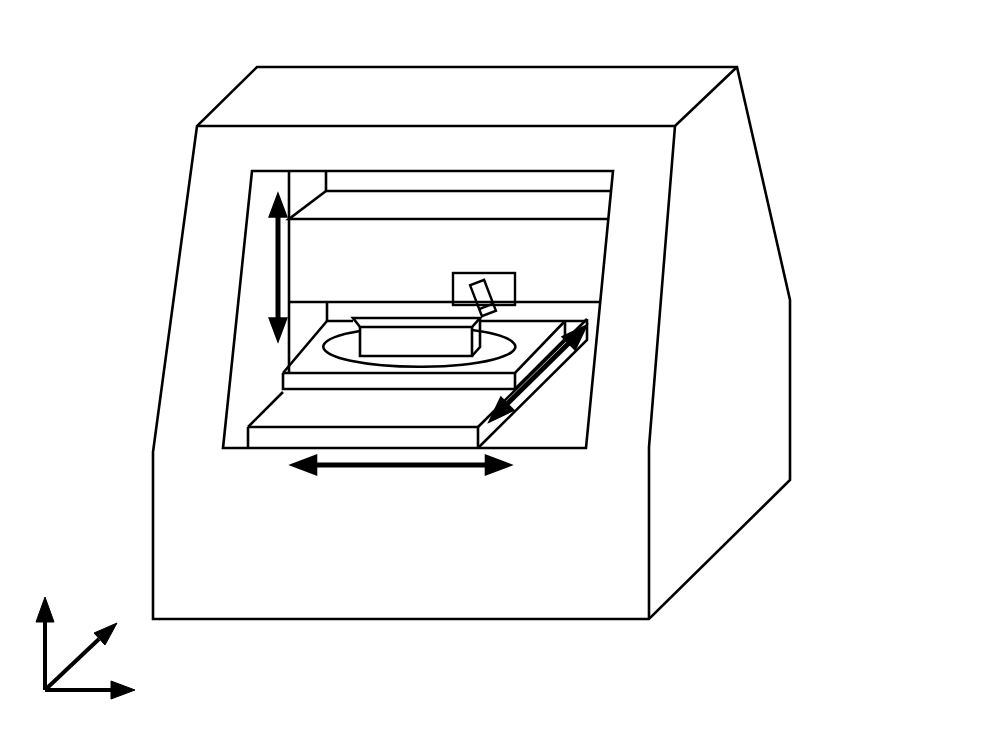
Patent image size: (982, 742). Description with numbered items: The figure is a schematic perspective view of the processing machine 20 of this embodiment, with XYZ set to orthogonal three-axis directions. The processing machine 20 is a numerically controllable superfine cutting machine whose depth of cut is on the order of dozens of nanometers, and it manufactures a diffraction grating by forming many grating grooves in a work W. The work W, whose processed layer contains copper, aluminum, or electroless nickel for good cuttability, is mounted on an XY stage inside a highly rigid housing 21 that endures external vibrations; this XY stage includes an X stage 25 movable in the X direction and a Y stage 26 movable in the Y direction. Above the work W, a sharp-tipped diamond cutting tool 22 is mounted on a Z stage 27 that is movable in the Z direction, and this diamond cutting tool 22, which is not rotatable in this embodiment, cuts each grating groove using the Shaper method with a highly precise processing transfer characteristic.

The processing machine 20 is at (363, 49).
The housing 21 is at (252, 92).
The diamond cutting tool 22 is at (478, 310).
The X stage 25 is at (450, 436).
The Y stage 26 is at (545, 352).
The Z stage 27 is at (587, 266).
The work W is at (377, 341).